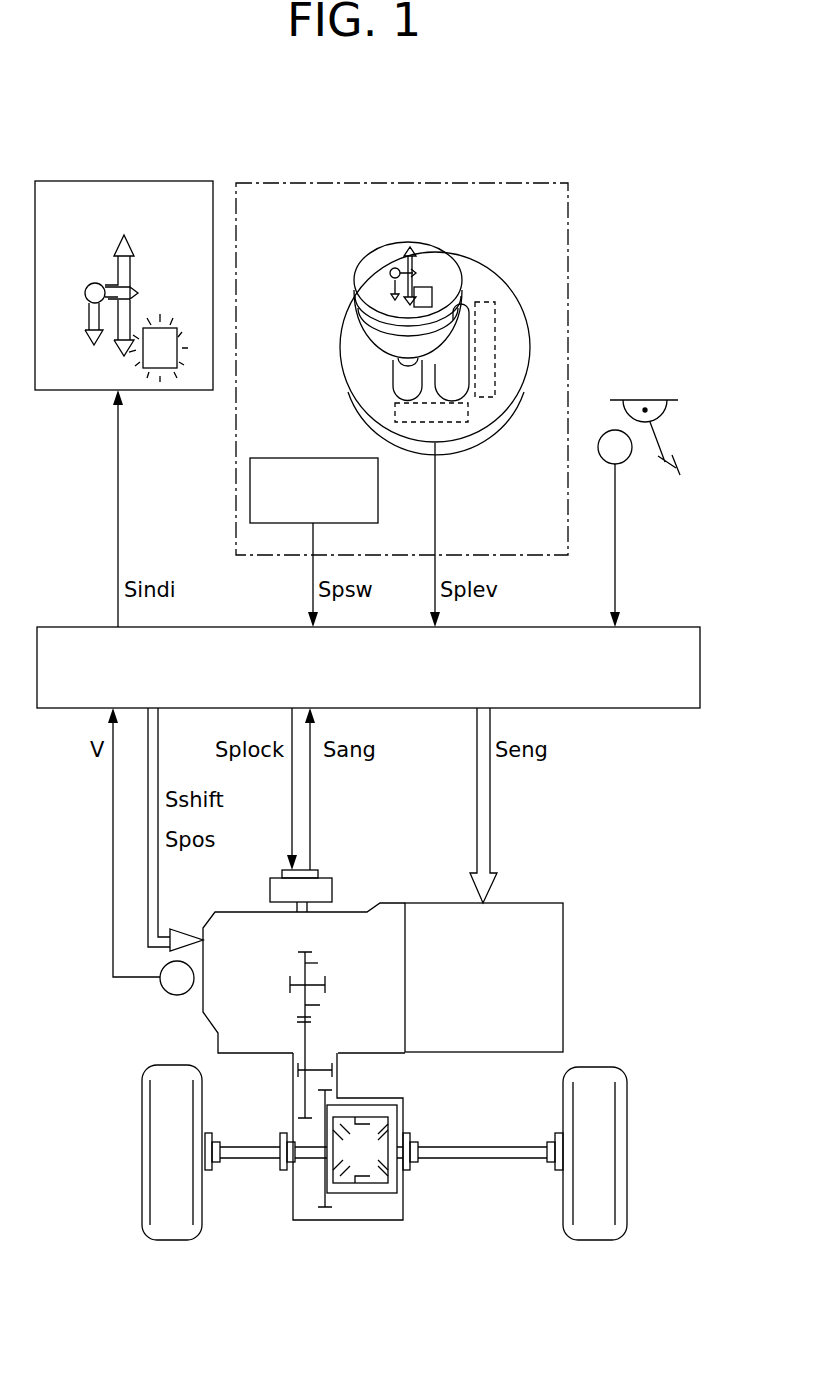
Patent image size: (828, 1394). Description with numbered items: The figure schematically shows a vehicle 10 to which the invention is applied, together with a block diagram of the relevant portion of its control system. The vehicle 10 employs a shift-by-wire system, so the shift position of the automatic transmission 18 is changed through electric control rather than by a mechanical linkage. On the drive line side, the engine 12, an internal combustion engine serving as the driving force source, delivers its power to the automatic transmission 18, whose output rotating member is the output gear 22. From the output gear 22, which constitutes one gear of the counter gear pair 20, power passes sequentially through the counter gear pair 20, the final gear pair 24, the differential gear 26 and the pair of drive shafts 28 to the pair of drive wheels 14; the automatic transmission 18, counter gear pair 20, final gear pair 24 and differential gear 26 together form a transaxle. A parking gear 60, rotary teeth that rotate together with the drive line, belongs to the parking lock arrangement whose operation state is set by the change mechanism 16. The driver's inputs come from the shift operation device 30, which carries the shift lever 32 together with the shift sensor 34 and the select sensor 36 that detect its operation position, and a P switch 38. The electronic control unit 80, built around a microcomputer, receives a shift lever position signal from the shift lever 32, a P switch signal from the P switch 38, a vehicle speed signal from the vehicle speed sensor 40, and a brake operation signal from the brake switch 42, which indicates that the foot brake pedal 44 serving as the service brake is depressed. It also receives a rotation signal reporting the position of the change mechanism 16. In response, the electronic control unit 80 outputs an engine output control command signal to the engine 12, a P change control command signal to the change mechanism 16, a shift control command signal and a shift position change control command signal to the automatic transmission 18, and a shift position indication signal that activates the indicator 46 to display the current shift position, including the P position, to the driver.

The vehicle 10 is at (602, 118).
The engine 12 is at (535, 912).
The drive wheels 14 is at (170, 1068).
The change mechanism 16 is at (326, 880).
The automatic transmission 18 is at (217, 928).
The counter gear pair 20 is at (284, 1014).
The output gear 22 is at (305, 951).
The final gear pair 24 is at (352, 1080).
The differential gear 26 is at (386, 1212).
The drive shafts 28 is at (237, 1160).
The shift operation device 30 is at (483, 184).
The shift lever 32 is at (399, 246).
The shift sensor 34 is at (497, 398).
The select sensor 36 is at (448, 423).
The P switch 38 is at (270, 462).
The vehicle speed sensor 40 is at (176, 995).
The brake switch 42 is at (604, 458).
The foot brake pedal 44 is at (652, 476).
The indicator 46 is at (189, 186).
The parking gear 60 is at (320, 963).
The electronic control unit 80 is at (528, 628).